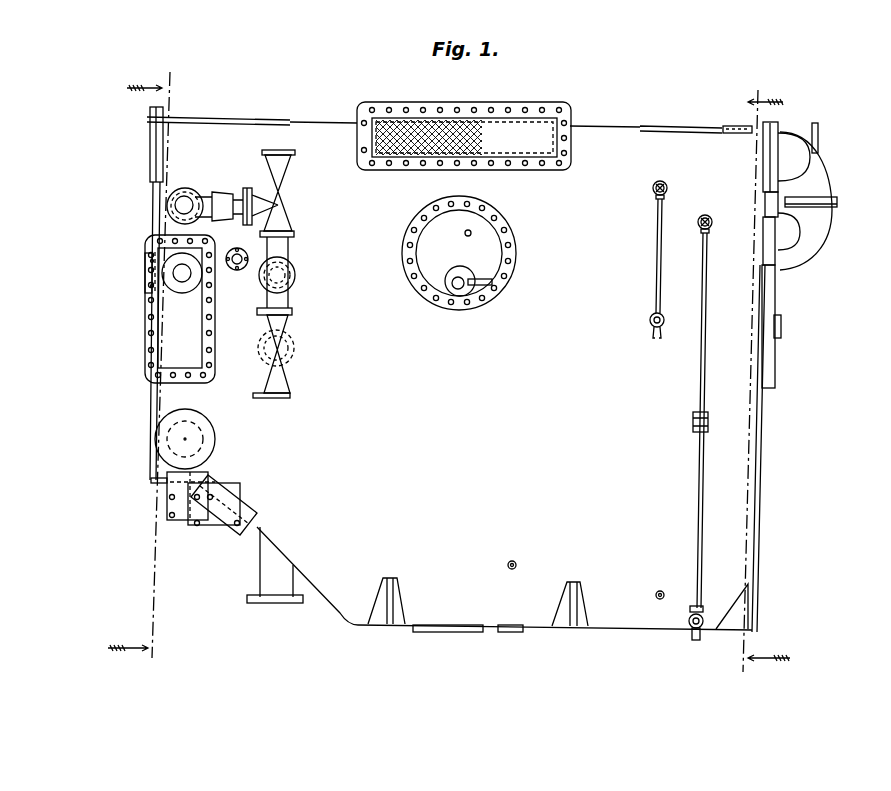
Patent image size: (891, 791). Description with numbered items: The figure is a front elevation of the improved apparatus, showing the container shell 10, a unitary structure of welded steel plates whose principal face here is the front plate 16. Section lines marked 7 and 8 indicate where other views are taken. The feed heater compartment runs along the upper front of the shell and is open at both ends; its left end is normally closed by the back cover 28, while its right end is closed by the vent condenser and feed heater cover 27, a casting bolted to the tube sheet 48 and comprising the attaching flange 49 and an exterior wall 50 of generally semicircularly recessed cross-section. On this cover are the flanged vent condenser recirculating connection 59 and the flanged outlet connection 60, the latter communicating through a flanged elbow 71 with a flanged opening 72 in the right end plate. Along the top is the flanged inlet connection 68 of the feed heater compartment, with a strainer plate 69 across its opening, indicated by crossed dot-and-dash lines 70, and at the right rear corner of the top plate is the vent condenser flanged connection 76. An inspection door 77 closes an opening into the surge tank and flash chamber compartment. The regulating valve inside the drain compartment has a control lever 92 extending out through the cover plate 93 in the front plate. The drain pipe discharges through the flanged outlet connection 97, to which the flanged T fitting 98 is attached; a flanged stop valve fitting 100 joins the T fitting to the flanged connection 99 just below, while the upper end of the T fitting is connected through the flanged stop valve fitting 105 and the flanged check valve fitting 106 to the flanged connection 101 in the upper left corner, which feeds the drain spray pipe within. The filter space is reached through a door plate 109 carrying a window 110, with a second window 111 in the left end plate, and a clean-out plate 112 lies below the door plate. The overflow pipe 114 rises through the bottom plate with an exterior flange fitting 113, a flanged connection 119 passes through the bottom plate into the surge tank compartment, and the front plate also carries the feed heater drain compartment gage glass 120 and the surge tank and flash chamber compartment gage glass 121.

The section line 7- 7 is at (758, 385).
The section line 8- 8 is at (140, 370).
The container shell 10 is at (758, 470).
The front plate 16 is at (738, 551).
The vent condenser and feed heater cover 27 is at (785, 150).
The back cover 28 is at (150, 147).
The tube sheet 48 is at (770, 124).
The attaching flange 49 is at (770, 170).
The exterior wall 50 is at (802, 166).
The flanged vent condenser recirculating connection 59 is at (818, 140).
The flanged outlet connection 60 is at (822, 186).
The flanged inlet connection 68 is at (401, 108).
The strainer plate 69 is at (463, 118).
The crossed dot-and-dash lines 70 is at (527, 127).
The flanged elbow 71 is at (810, 228).
The flanged opening 72 is at (774, 240).
The vent condenser flanged connection 76 is at (732, 127).
The inspection door 77 is at (772, 370).
The control lever 92 is at (485, 279).
The cover plate 93 is at (497, 243).
The flanged outlet connection 97 is at (294, 270).
The flanged T fitting 98 is at (281, 302).
The flanged connection 99 is at (293, 356).
The flanged stop valve fitting 100 is at (276, 323).
The flanged connection 101 is at (170, 207).
The flanged stop valve fitting 105 is at (283, 207).
The flanged check valve fitting 106 is at (230, 178).
The door plate 109 is at (150, 325).
The window 110 is at (182, 278).
The window 111 is at (147, 270).
The plate 112 is at (157, 432).
The exterior flange fitting 113 is at (278, 604).
The overflow pipe 114 is at (263, 560).
The flanged connection 119 is at (458, 632).
The feed heater drain compartment gage glass 120 is at (654, 266).
The surge tank and flash chamber compartment gage glass 121 is at (698, 371).